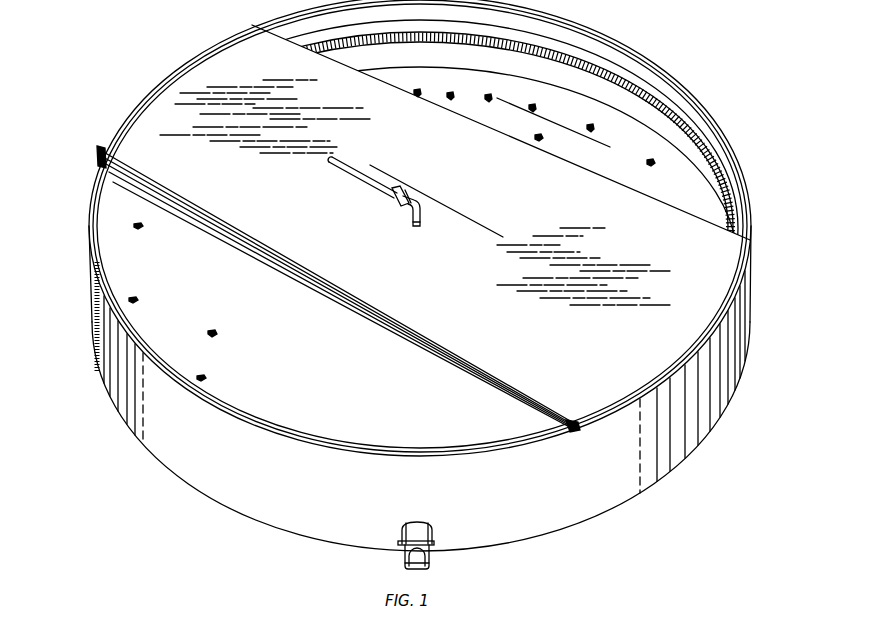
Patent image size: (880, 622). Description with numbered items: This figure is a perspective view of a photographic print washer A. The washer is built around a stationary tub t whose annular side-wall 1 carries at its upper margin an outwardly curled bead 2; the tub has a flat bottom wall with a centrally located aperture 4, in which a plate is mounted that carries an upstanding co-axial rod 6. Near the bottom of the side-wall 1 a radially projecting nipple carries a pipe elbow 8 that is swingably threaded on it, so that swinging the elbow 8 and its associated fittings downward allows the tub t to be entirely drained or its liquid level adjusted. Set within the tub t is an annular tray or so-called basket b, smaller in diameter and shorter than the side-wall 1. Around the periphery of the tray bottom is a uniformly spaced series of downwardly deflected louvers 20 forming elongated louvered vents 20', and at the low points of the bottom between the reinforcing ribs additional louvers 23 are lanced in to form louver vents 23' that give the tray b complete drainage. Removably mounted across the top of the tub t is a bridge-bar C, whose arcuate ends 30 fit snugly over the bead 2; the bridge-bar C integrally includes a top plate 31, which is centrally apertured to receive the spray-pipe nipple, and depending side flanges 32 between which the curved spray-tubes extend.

The annular side-wall 1 is at (225, 492).
The outwardly curled bead 2 is at (100, 151).
The centrally located aperture 4 is at (441, 436).
The upstanding co-axial rod 6 is at (501, 104).
The pipe elbow 8 is at (394, 175).
The louvers 20 is at (633, 163).
The louvered vents 20' is at (410, 229).
The additional louvers 23 is at (353, 235).
The louver vents 23' is at (383, 242).
The arcuate ends 30 is at (567, 432).
The top plate 31 is at (664, 263).
The depending side flanges 32 is at (216, 238).
The photographic print washer A is at (112, 388).
The bridge-bar C is at (756, 249).
The annular tray b is at (535, 81).
The stationary tub t is at (641, 70).